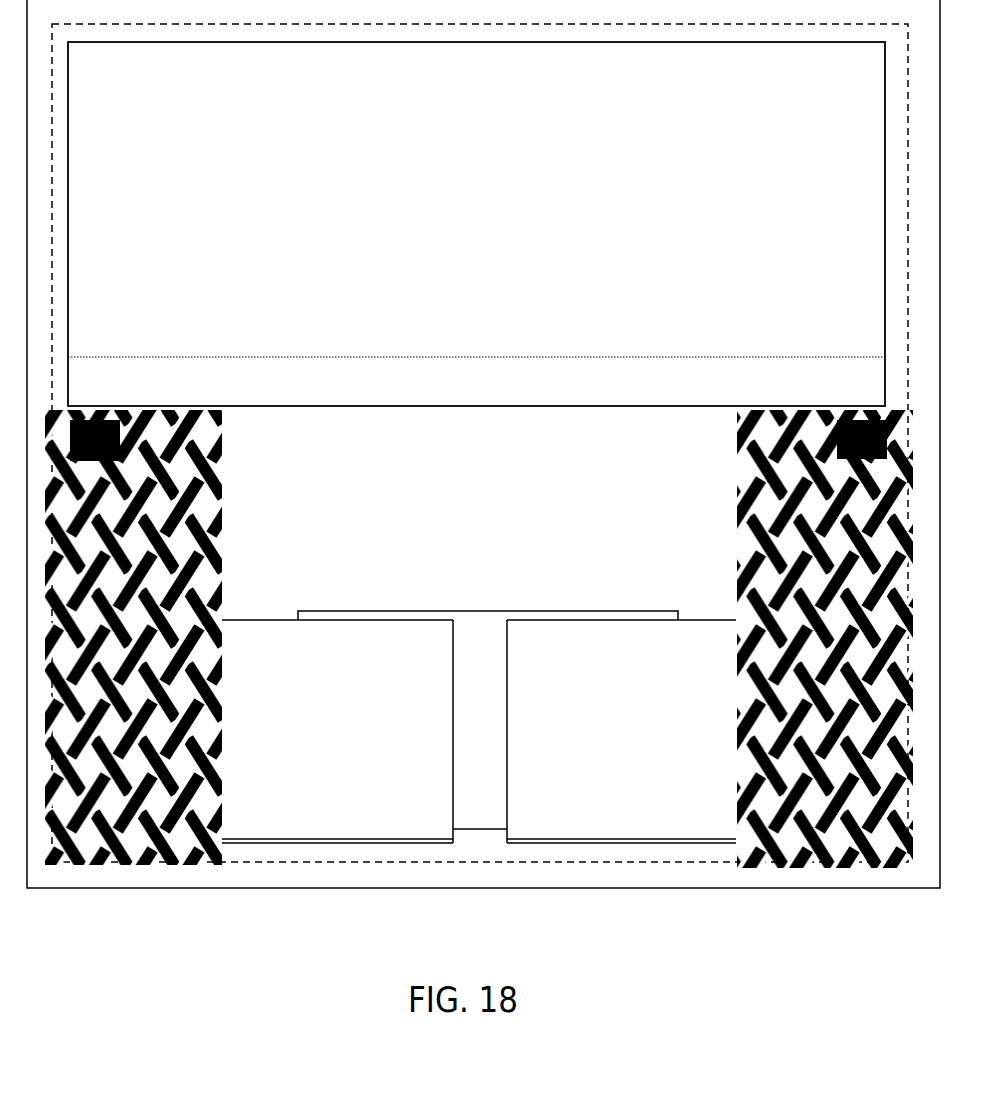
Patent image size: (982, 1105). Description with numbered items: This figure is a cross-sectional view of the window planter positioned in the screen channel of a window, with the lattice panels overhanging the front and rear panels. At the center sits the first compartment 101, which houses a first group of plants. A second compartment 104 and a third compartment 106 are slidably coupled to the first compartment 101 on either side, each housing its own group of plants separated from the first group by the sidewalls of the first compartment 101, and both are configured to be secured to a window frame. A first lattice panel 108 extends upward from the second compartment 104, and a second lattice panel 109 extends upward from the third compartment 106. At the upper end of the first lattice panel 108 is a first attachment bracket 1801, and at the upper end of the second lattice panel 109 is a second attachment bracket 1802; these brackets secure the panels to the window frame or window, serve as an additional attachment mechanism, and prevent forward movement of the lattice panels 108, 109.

The first compartment 101 is at (491, 729).
The second compartment 104 is at (337, 729).
The third compartment 106 is at (637, 733).
The first lattice panel 108 is at (208, 437).
The second lattice panel 109 is at (761, 428).
The first attachment bracket 1801 is at (99, 420).
The second attachment bracket 1802 is at (853, 420).